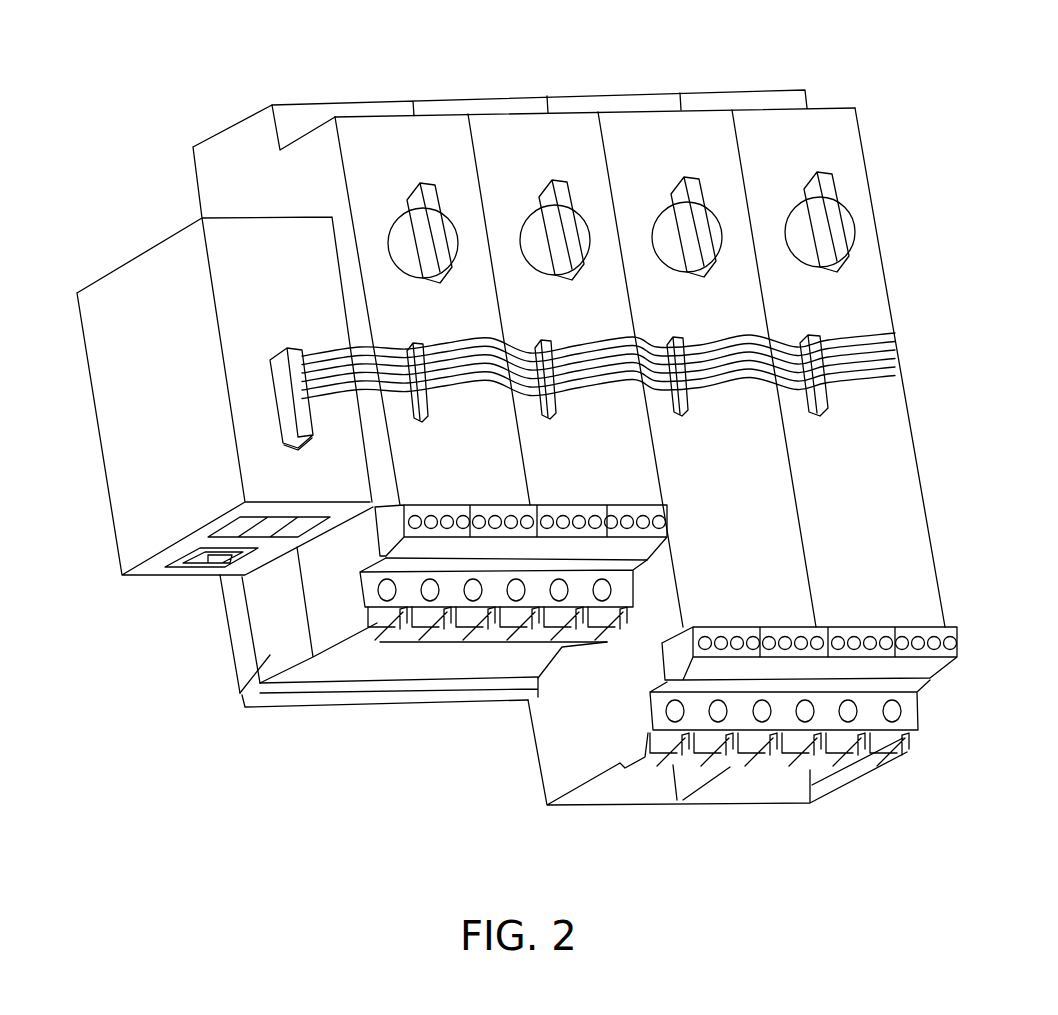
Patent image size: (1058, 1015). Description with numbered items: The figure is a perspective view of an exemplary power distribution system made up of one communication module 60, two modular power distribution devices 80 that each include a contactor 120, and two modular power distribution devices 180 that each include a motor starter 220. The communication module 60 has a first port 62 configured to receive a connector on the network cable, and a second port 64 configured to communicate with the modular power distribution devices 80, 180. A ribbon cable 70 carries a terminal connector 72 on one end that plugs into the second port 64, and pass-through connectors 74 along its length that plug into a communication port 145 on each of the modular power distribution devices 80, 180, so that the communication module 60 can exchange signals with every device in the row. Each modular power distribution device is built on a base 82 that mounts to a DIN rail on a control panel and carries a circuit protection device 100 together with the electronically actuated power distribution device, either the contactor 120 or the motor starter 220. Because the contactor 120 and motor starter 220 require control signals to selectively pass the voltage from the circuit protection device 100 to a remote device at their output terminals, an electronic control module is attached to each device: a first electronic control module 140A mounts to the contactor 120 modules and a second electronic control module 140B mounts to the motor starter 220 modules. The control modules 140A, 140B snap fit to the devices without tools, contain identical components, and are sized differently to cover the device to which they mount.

The communication module 60 is at (130, 525).
The first port 62 is at (208, 573).
The second port 64 is at (277, 409).
The ribbon cable 70 is at (338, 402).
The terminal connector 72 is at (293, 452).
The pass-through connectors 74 is at (422, 423).
The modular power distribution device 80 is at (321, 95).
The base 82 is at (233, 628).
The circuit protection device 100 is at (253, 148).
The contactor 120 is at (242, 695).
The first electronic control module 140A is at (515, 502).
The second electronic control module 140B is at (767, 599).
The communication port 145 is at (408, 430).
The modular power distribution device 180 is at (610, 91).
The motor starter 220 is at (558, 760).